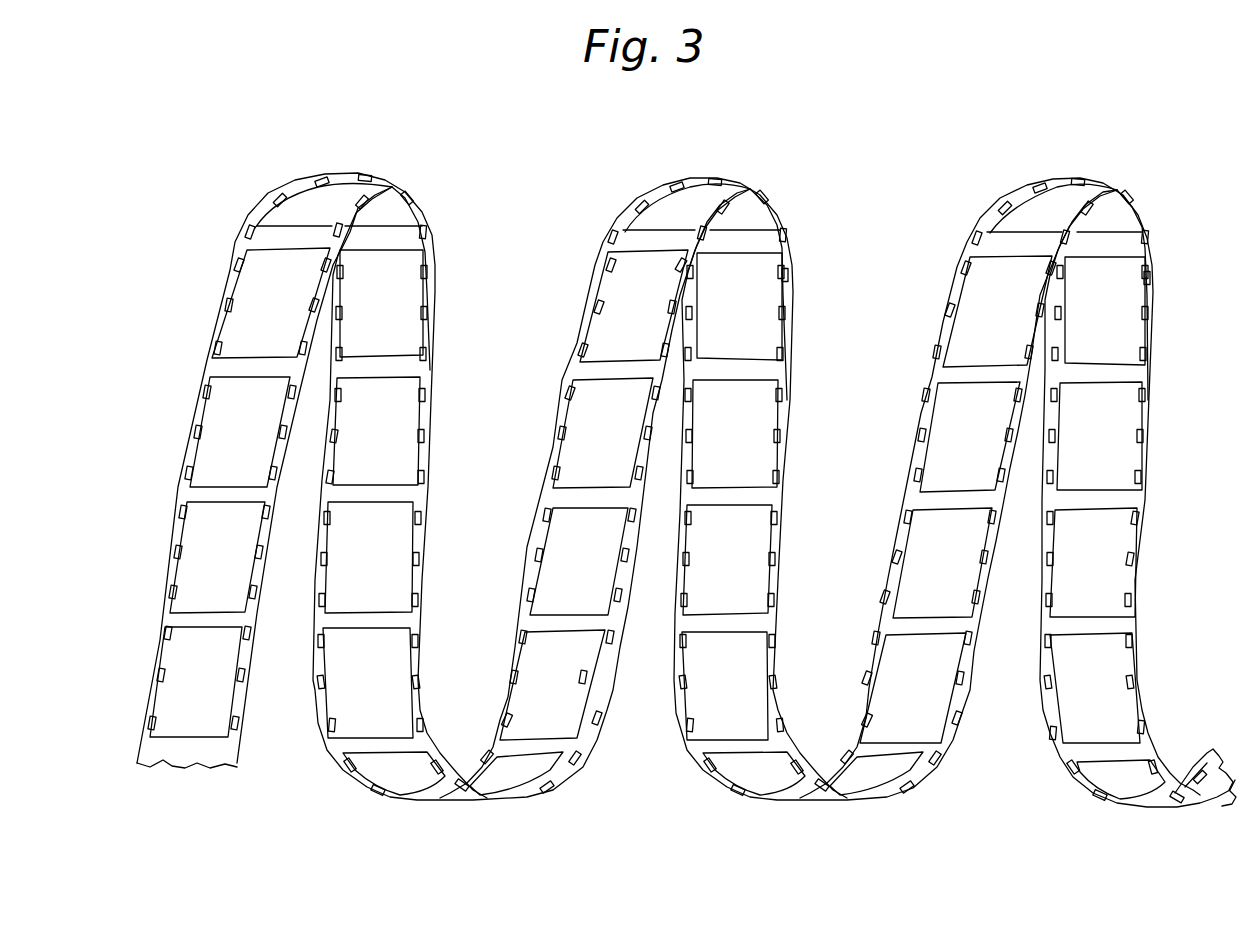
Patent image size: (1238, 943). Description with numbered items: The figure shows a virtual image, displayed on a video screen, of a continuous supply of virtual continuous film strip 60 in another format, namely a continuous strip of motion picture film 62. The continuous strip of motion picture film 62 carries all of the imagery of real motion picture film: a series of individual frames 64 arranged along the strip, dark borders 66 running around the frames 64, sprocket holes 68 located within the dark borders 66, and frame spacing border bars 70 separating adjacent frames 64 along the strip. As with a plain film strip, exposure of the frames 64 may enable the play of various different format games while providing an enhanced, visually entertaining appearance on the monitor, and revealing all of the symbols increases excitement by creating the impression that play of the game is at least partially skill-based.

The virtual continuous film strip 60 is at (588, 146).
The continuous strip of motion picture film 62 is at (440, 330).
The individual frames 64 is at (407, 418).
The dark borders 66 is at (508, 692).
The sprocket holes 68 is at (432, 293).
The frame spacing border bars 70 is at (557, 502).